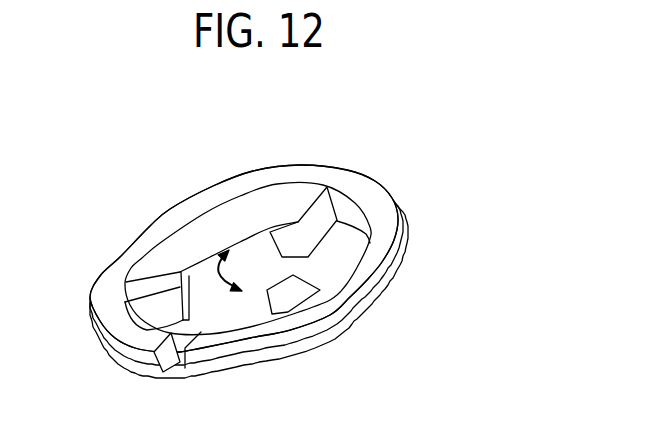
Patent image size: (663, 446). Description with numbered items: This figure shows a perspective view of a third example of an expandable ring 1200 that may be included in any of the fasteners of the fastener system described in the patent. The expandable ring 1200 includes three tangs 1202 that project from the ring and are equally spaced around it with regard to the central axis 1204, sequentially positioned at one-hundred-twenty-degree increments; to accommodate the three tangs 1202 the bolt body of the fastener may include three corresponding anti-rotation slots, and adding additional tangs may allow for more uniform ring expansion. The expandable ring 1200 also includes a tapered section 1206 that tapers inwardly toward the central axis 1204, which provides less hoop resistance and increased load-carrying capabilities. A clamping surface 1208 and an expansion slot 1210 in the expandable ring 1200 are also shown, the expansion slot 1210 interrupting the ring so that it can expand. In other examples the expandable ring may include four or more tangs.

The expandable ring 1200 is at (408, 149).
The tangs 1202 is at (156, 281).
The central axis 1204 is at (220, 282).
The tapered section 1206 is at (326, 333).
The clamping surface 1208 is at (121, 260).
The expansion slot 1210 is at (178, 362).